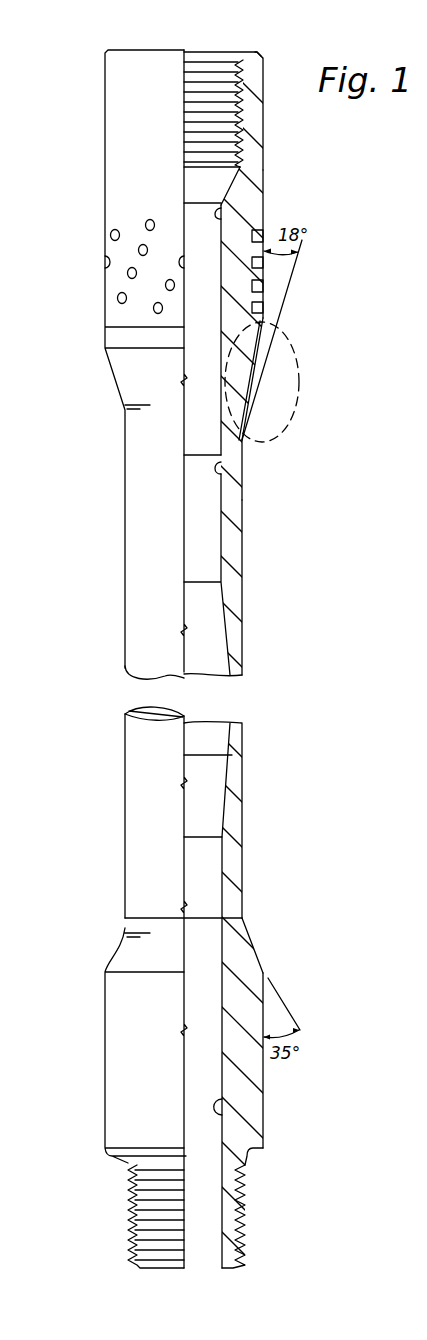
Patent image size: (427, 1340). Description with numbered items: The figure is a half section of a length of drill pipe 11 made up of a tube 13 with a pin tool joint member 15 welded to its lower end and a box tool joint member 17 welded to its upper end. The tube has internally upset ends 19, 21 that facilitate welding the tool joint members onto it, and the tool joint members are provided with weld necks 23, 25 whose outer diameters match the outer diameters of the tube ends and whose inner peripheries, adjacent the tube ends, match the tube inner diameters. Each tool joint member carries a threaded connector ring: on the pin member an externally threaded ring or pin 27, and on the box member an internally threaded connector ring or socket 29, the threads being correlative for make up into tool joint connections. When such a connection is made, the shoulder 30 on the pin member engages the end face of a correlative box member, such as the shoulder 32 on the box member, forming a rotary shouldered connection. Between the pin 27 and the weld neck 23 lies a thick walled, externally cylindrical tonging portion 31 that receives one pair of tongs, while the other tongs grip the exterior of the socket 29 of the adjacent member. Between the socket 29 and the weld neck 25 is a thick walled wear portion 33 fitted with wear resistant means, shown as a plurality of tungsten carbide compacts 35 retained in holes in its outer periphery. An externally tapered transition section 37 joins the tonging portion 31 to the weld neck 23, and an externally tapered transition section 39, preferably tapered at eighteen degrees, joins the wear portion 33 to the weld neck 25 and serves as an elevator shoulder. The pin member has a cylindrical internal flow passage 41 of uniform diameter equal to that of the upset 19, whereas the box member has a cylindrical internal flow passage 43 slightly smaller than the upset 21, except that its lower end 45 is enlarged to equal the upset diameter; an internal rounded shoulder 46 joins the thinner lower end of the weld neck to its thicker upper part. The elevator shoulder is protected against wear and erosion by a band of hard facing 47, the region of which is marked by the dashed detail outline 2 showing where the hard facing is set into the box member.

The drill pipe 11 is at (117, 641).
The tube 13 is at (123, 710).
The pin tool joint member 15 is at (98, 1065).
The box tool joint member 17 is at (96, 208).
The internally upset end 19 is at (236, 799).
The internally upset end 21 is at (235, 530).
The weld neck 23 is at (236, 937).
The weld neck 25 is at (235, 487).
The externally threaded ring or pin 27 is at (234, 1206).
The internally threaded connector ring or socket 29 is at (254, 122).
The shoulder 30 is at (248, 1163).
The tonging portion 31 is at (250, 1084).
The shoulder 32 is at (252, 50).
The wear portion 33 is at (233, 288).
The tungsten carbide compacts 35 is at (104, 262).
The externally tapered transition section 37 is at (243, 964).
The externally tapered transition section 39 is at (237, 381).
The cylindrical internal flow passage 41 is at (222, 1112).
The cylindrical internal flow passage 43 is at (222, 211).
The lower end of passage 45 is at (222, 472).
The internal rounded shoulder 46 is at (216, 463).
The band of hard facing 47 is at (245, 402).
The detail area of FIG. 2 is at (299, 425).